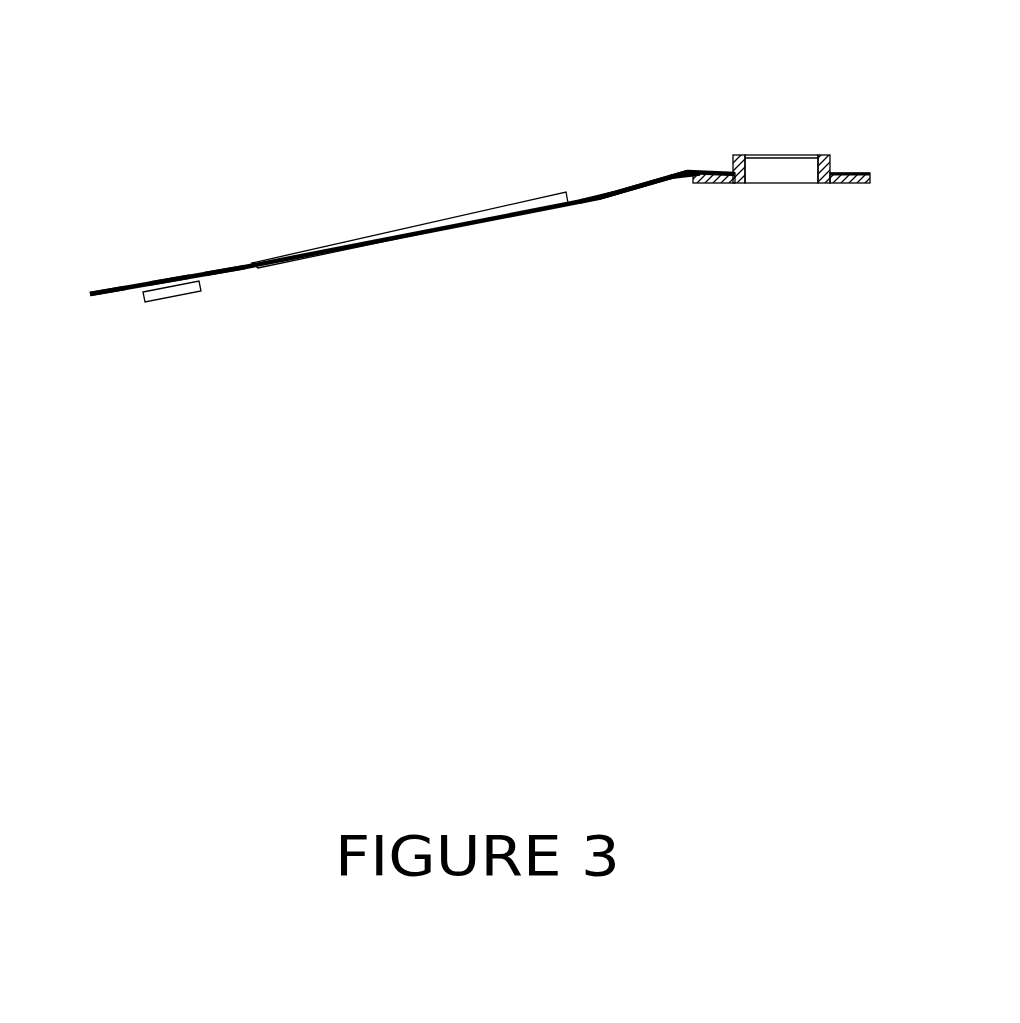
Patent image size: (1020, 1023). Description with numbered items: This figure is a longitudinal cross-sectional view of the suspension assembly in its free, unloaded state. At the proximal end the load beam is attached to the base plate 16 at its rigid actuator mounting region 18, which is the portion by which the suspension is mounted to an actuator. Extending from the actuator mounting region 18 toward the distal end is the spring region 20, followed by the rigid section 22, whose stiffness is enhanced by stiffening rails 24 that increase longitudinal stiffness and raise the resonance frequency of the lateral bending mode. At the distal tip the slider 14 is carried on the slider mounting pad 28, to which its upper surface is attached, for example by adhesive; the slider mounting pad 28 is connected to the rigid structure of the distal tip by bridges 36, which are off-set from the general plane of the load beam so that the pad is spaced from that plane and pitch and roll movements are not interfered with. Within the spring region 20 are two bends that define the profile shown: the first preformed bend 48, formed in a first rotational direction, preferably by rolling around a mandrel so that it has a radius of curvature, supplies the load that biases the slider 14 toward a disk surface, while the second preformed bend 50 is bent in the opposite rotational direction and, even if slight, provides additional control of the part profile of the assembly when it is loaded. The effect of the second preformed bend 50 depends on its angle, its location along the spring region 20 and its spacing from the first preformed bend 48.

The slider 14 is at (165, 294).
The base plate 16 is at (842, 184).
The rigid actuator mounting region 18 is at (718, 173).
The spring region 20 is at (617, 189).
The rigid section 22 is at (387, 236).
The stiffening rails 24 is at (540, 200).
The slider mounting pad 28 is at (161, 280).
The bridges 36 is at (110, 298).
The first preformed bend 48 is at (687, 172).
The second preformed bend 50 is at (594, 201).